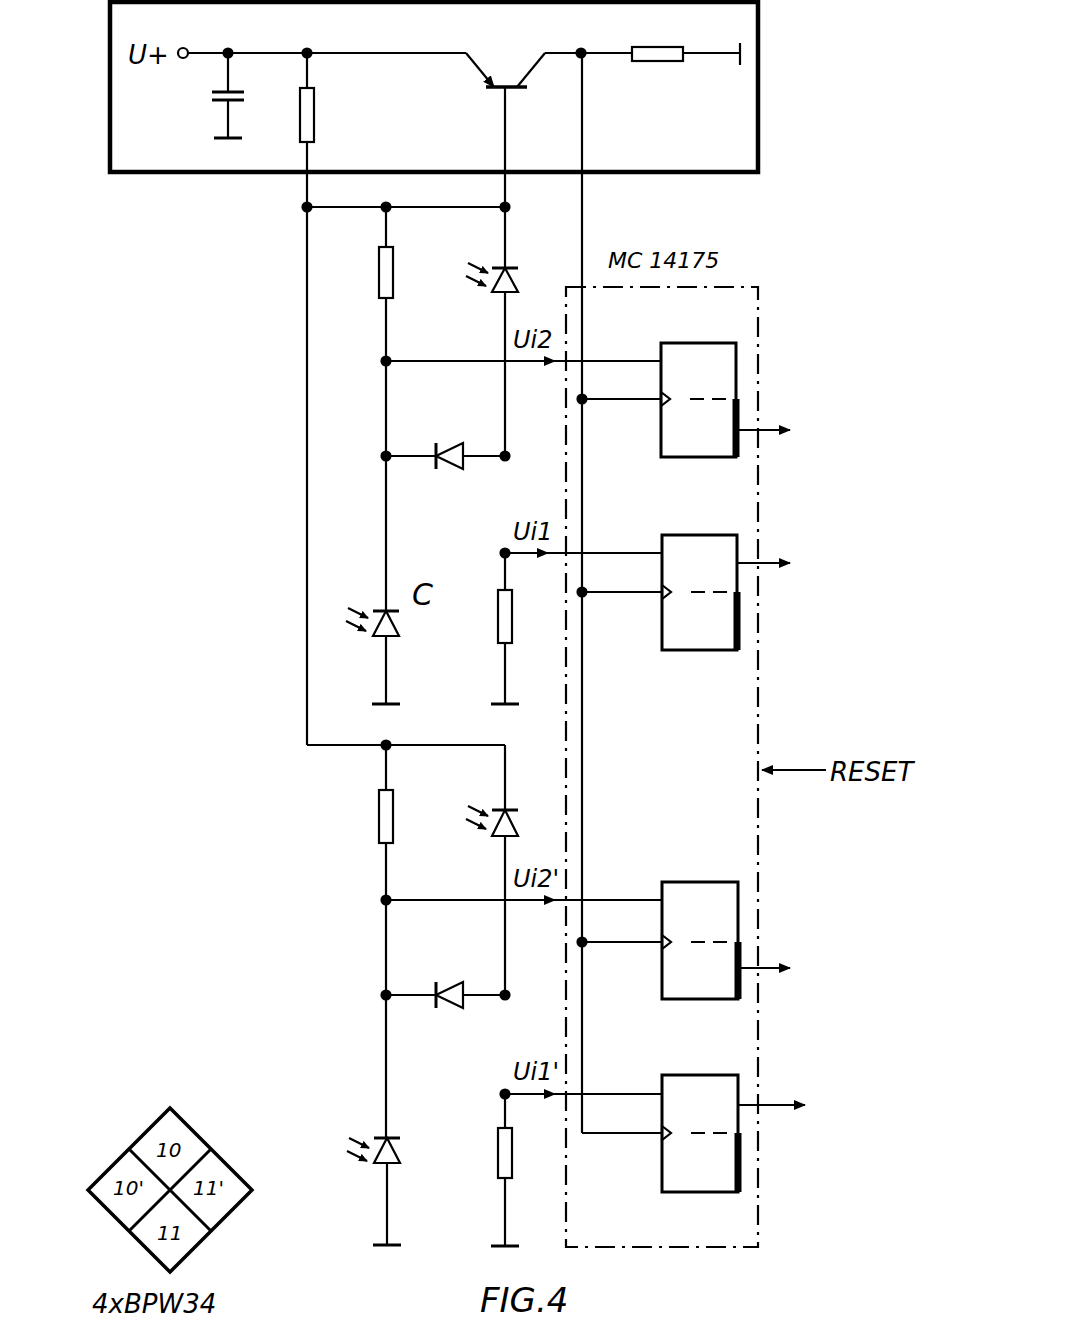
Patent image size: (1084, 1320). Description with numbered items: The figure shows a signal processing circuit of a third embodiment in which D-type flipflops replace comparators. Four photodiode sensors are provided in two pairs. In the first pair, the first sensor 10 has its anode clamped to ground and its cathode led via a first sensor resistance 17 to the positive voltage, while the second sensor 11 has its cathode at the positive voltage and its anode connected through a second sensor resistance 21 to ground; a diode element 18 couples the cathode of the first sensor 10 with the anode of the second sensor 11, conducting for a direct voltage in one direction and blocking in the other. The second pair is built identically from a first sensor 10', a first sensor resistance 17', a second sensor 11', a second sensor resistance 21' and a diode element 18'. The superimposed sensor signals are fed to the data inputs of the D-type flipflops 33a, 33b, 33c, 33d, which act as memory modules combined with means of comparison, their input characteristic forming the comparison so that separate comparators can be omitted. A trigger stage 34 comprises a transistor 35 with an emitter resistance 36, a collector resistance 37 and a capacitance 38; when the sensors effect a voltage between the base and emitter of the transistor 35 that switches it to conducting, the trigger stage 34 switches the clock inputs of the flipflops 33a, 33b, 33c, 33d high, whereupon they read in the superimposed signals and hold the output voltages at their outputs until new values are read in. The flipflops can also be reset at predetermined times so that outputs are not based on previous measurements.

The trigger stage 34 is at (763, 135).
The capacitance 38 is at (215, 93).
The emitter resistance 36 is at (314, 105).
The transistor 35 is at (521, 90).
The collector resistance 37 is at (686, 52).
The first sensor resistance 17 is at (420, 409).
The second sensor 11 is at (513, 331).
The diode element 18 is at (446, 432).
The first sensor 10 is at (363, 632).
The second sensor resistance 21 is at (476, 628).
The first sensor resistance 17' is at (345, 941).
The second sensor 11' is at (482, 870).
The diode element 18' is at (446, 1003).
The first sensor 10' is at (358, 1191).
The second sensor resistance 21' is at (477, 1170).
The D-type flipflop 33a is at (737, 361).
The D-type flipflop 33b is at (738, 620).
The D-type flipflop 33c is at (739, 904).
The D-type flipflop 33d is at (740, 1172).